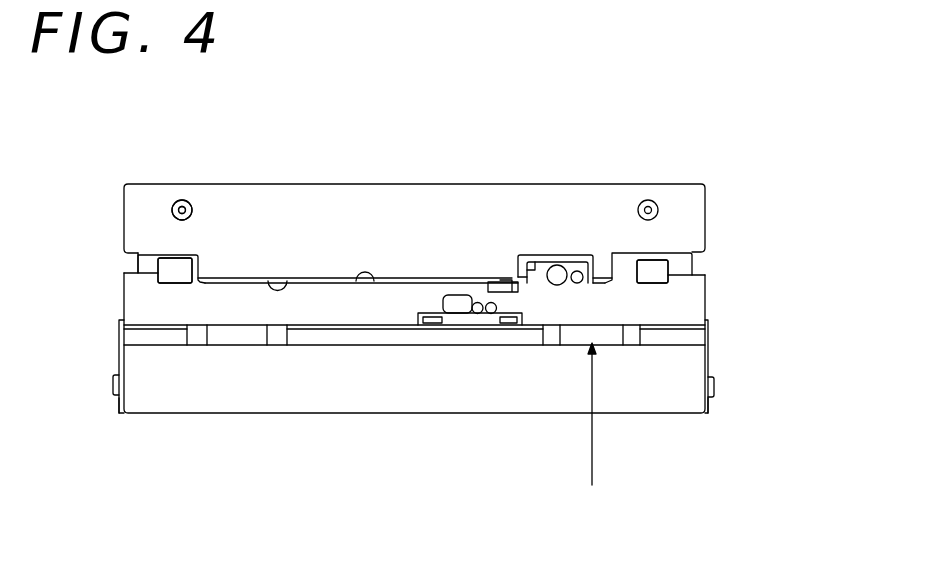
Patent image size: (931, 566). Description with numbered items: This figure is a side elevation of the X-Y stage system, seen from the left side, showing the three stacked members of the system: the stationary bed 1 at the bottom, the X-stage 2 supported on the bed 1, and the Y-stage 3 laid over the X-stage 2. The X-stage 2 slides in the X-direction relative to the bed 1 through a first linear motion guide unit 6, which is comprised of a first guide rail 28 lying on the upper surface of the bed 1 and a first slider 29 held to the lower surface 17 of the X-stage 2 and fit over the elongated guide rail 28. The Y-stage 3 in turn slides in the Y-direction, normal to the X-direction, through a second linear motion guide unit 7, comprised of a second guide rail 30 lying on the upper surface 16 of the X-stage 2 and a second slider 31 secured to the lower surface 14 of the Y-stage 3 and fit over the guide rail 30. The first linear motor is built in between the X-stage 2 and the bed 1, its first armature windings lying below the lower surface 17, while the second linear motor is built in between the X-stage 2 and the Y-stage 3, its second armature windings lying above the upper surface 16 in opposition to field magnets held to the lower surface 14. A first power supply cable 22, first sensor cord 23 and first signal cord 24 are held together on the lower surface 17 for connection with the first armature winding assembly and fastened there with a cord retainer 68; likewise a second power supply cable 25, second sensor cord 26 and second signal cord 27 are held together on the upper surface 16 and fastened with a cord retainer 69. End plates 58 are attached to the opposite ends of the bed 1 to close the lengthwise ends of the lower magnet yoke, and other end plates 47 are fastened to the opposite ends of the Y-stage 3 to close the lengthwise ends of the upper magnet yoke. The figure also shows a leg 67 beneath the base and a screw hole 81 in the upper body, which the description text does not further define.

The stationary bed 1 is at (480, 390).
The X-stage 2 is at (670, 308).
The Y-stage 3 is at (572, 215).
The first linear motion guide unit 6 is at (586, 428).
The second linear motion guide unit 7 is at (168, 252).
The lower surface of the Y-stage 14 is at (273, 285).
The upper surface of the X-stage 16 is at (373, 282).
The lower surface of the X-stage 17 is at (320, 327).
The first power supply cable 22 is at (453, 305).
The first sensor cord 23 is at (477, 309).
The first signal cord 24 is at (491, 309).
The second power supply cable 25 is at (558, 267).
The second sensor cord 26 is at (577, 268).
The second signal cord 27 is at (592, 258).
The first guide rail 28 is at (335, 338).
The first slider 29 is at (237, 340).
The second guide rail 30 is at (172, 273).
The second slider 31 is at (150, 262).
The end plates 47 is at (407, 220).
The end plates 58 is at (120, 360).
The leg 67 is at (116, 395).
The cord retainer 68 is at (463, 308).
The cord retainer 69 is at (545, 253).
The screw hole 81 is at (184, 206).